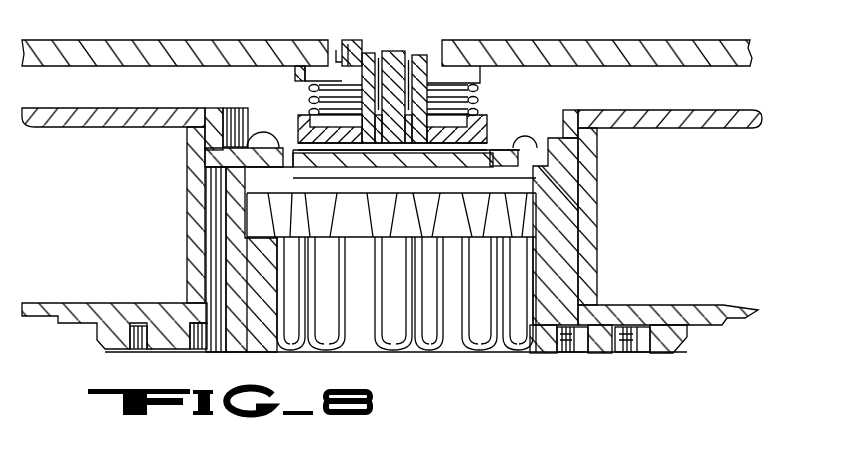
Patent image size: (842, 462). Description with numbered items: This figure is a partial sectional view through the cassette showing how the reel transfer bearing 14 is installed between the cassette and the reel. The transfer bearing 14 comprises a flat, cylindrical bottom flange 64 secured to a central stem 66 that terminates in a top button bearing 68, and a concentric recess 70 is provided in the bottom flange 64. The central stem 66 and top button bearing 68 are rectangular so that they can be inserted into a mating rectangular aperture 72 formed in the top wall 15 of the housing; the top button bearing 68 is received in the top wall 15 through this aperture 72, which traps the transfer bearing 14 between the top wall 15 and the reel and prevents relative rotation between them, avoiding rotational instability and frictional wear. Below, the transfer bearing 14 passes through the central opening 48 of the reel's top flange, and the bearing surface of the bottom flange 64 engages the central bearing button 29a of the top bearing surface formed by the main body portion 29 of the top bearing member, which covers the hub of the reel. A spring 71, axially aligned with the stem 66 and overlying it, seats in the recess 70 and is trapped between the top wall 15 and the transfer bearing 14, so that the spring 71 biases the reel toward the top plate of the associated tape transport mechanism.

The top wall 15 is at (133, 52).
The reel transfer bearing 14 is at (328, 79).
The mating rectangular aperture 72 is at (353, 48).
The top button bearing 68 is at (393, 51).
The central stem 66 is at (430, 79).
The concentric recess 70 is at (466, 112).
The central opening 48 is at (497, 143).
The bottom flange 64 is at (275, 115).
The spring 71 is at (297, 133).
The central bearing button 29a is at (395, 147).
The main body portion 29 is at (446, 167).